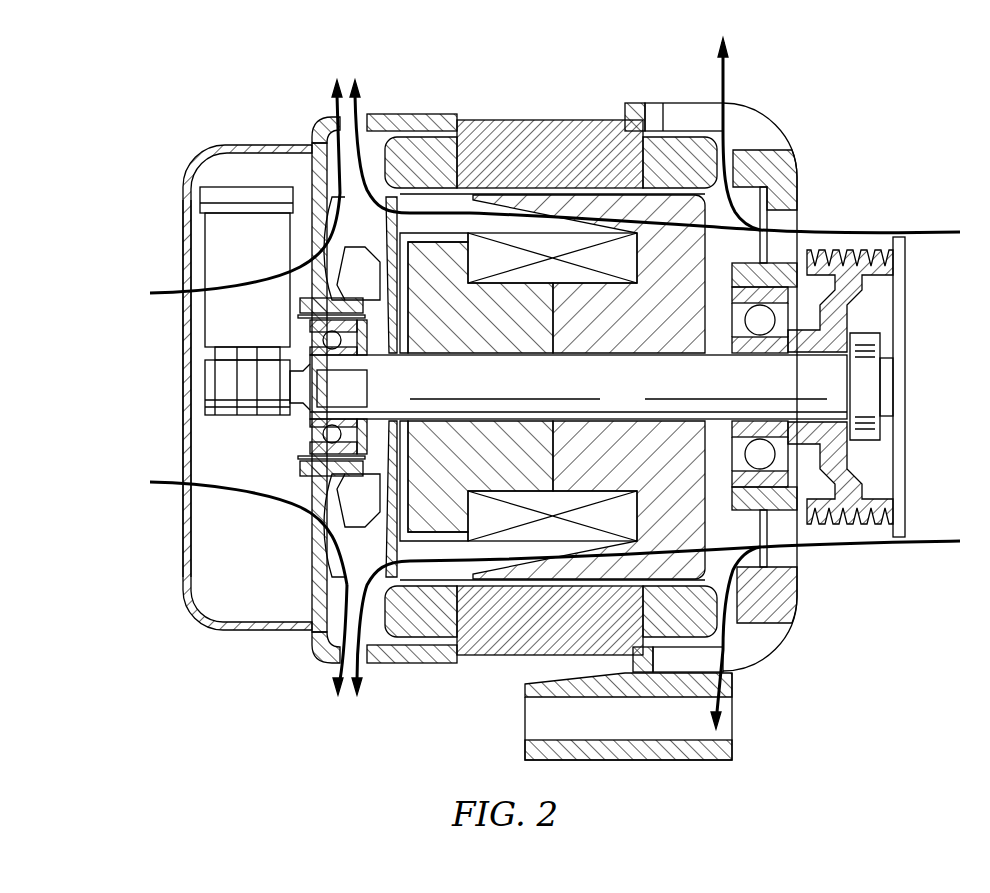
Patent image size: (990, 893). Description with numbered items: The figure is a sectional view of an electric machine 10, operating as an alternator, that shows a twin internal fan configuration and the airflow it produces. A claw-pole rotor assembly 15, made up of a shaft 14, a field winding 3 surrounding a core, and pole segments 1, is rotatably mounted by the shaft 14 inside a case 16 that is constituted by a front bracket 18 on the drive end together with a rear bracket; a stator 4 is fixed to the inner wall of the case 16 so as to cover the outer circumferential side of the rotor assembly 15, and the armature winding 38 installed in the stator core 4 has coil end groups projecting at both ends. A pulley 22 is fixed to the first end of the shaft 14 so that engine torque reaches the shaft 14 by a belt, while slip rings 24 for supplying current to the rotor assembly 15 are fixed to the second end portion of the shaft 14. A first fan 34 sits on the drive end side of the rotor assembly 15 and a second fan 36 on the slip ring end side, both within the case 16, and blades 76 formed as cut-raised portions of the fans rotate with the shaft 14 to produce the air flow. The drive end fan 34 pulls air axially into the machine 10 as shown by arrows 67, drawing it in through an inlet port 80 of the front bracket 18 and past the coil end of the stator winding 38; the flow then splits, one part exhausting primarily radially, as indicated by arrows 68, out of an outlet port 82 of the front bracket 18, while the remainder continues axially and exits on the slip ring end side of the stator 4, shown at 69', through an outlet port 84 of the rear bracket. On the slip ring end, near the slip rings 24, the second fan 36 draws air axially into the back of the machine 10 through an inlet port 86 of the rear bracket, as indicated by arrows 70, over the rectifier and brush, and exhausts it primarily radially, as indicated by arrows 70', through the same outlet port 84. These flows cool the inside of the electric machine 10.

The pole segments 1 is at (579, 194).
The field winding 3 is at (535, 605).
The stator 4 is at (529, 161).
The electric machine 10 is at (199, 675).
The shaft 14 is at (600, 387).
The rotor assembly 15 is at (390, 274).
The case 16 is at (183, 572).
The front bracket 18 is at (795, 167).
The pulley 22 is at (907, 238).
The slip rings 24 is at (207, 388).
The first fan 34 is at (752, 575).
The second fan 36 is at (333, 197).
The armature winding 38 is at (423, 170).
The arrows 67 is at (928, 227).
The arrows 68 is at (725, 113).
The axial flow exit 69' is at (393, 387).
The arrows 70 is at (242, 389).
The arrows 70' is at (302, 387).
The blades 76 is at (752, 198).
The inlet port 80 is at (793, 220).
The outlet port 82 is at (758, 132).
The outlet port 84 is at (313, 139).
The inlet port 86 is at (183, 213).